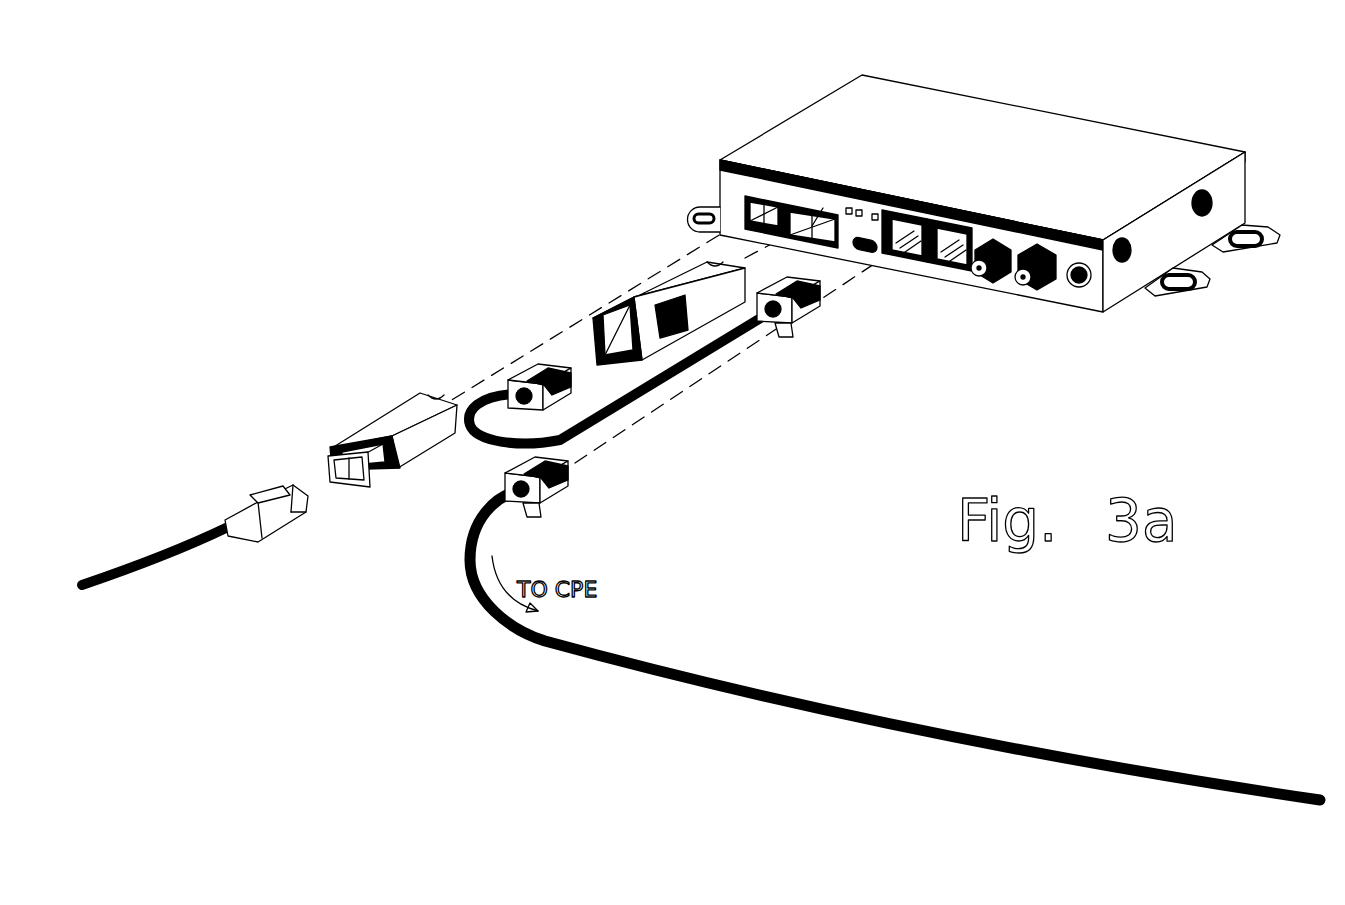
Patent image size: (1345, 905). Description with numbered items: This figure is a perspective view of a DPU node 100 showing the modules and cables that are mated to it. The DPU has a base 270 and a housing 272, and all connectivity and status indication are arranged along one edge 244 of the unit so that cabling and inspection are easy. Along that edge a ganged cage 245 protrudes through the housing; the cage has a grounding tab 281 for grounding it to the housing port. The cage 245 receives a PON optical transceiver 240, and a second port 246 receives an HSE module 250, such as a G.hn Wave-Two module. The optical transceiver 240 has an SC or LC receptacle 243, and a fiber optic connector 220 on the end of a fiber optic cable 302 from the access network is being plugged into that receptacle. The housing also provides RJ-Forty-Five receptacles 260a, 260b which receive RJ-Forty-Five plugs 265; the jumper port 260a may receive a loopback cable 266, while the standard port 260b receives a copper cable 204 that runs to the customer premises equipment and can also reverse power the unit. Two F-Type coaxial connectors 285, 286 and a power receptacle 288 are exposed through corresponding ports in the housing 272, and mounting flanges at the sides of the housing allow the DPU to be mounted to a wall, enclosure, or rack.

The DPU node 100 is at (984, 215).
The housing 272 is at (1060, 117).
The base 270 is at (1125, 302).
The edge of the unit 244 is at (773, 163).
The cage 245 is at (755, 212).
The port 246 is at (777, 197).
The grounding tab 281 is at (823, 208).
The jumper port 260a is at (893, 252).
The standard port 260b is at (957, 262).
The F-Type coaxial connector 285 is at (978, 270).
The F-Type coaxial connector 286 is at (1018, 280).
The power receptacle 288 is at (1080, 290).
The HSE module 250 is at (673, 280).
The optical transceiver 240 is at (362, 481).
The SC or LC receptacle 243 is at (357, 485).
The fiber optic cable and connector 220 is at (215, 528).
The fiber optic cable 302 is at (138, 583).
The RJ-45 plug 265 is at (520, 378).
The loopback cable 266 is at (640, 402).
The copper cable 204 is at (690, 688).